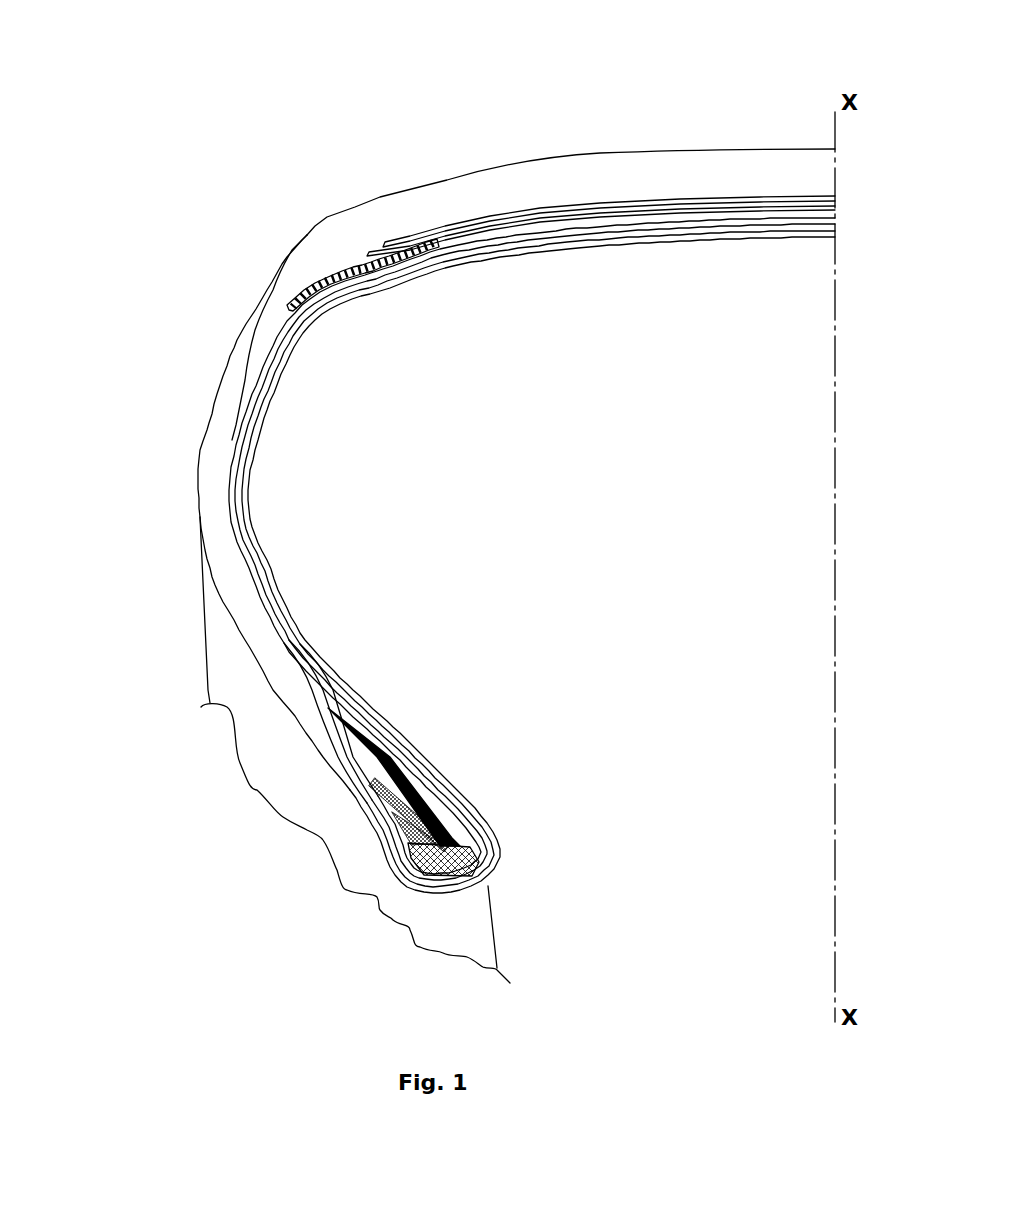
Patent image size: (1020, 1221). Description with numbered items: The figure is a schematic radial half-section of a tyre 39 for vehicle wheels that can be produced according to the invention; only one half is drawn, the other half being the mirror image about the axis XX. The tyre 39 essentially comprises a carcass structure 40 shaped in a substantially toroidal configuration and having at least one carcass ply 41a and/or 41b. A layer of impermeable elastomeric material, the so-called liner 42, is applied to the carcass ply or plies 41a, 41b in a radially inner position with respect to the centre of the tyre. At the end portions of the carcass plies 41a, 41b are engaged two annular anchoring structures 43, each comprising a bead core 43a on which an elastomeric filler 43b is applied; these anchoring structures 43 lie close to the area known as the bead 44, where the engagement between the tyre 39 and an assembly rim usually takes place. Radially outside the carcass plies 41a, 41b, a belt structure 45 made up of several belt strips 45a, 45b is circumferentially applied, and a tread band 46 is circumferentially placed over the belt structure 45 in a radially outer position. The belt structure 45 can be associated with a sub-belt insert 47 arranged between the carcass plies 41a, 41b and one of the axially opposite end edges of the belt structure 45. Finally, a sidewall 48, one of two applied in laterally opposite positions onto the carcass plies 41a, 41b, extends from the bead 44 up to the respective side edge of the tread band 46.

The tyre 39 is at (157, 548).
The carcass structure 40 is at (229, 481).
The carcass ply 41a is at (307, 670).
The carcass ply 41b is at (277, 640).
The liner 42 is at (413, 283).
The annular anchoring structure 43 is at (407, 787).
The bead core 43a is at (478, 858).
The elastomeric filler 43b is at (430, 760).
The bead 44 is at (469, 804).
The belt structure 45 is at (605, 141).
The belt strip 45a is at (607, 207).
The belt strip 45b is at (643, 215).
The tread band 46 is at (700, 165).
The sub-belt insert 47 is at (362, 265).
The sidewall 48 is at (215, 427).